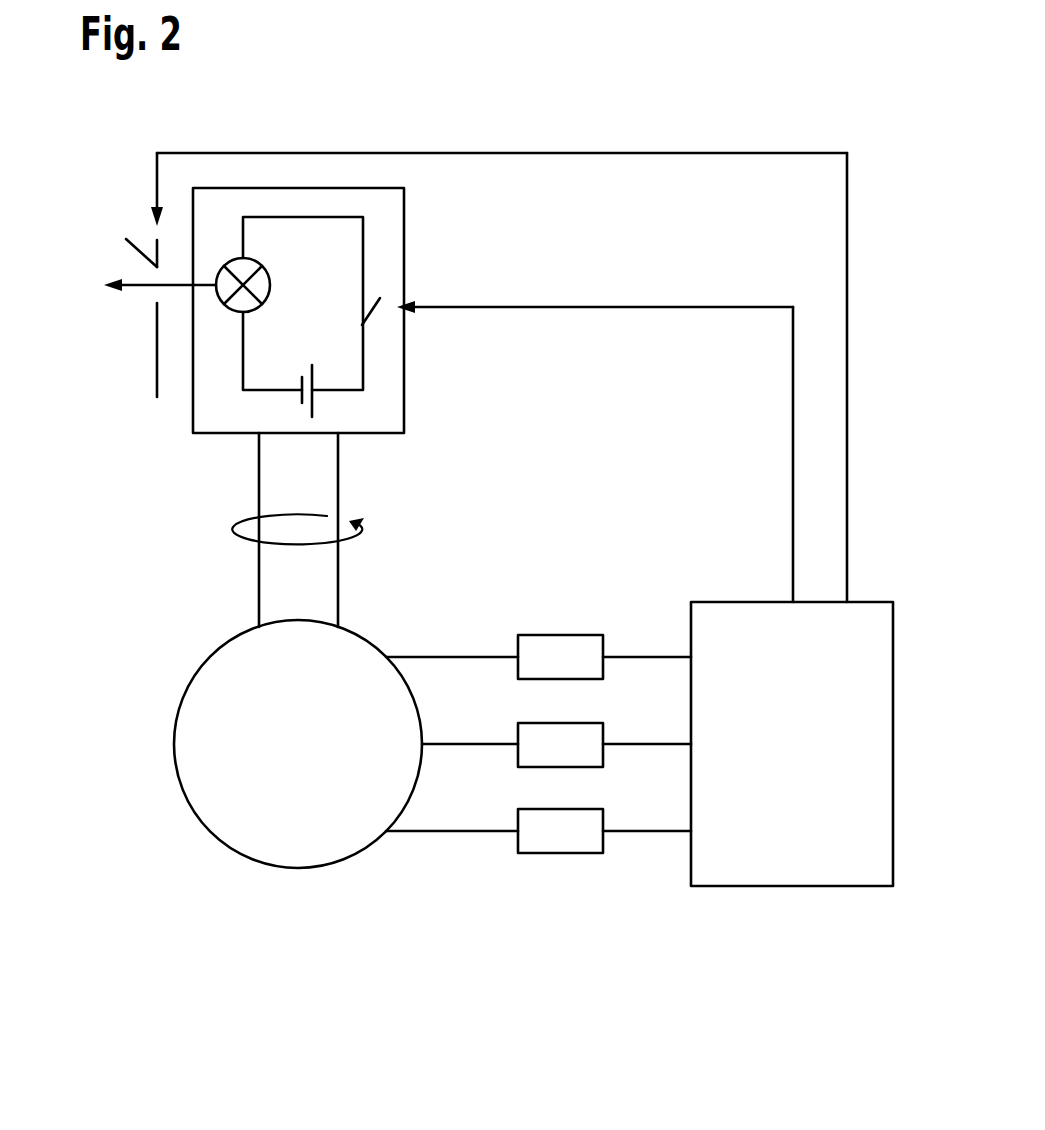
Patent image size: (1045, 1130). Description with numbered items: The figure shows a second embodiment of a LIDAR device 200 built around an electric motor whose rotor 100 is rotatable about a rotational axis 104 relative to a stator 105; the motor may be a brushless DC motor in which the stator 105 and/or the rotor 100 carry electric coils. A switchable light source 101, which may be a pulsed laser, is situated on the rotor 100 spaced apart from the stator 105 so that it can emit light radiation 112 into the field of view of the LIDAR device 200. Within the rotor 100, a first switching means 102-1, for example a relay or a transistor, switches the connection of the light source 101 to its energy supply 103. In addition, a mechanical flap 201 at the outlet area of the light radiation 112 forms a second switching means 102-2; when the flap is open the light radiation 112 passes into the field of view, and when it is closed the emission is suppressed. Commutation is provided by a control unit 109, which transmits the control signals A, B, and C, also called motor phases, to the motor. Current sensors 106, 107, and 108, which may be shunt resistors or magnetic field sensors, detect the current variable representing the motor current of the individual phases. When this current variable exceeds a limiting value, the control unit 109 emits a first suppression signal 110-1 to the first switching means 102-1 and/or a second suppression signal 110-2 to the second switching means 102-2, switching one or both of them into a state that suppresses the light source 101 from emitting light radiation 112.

The rotor 100 is at (370, 146).
The LIDAR device 200 is at (770, 120).
The switchable light source 101 is at (239, 259).
The second switching means 102-2 is at (140, 244).
The mechanical flap 201 is at (122, 202).
The first switching means 102-1 is at (382, 284).
The energy supply 103 is at (302, 398).
The rotational axis 104 is at (283, 585).
The stator 105 is at (330, 863).
The current sensor 106 is at (558, 635).
The current sensor 107 is at (603, 754).
The current sensor 108 is at (560, 853).
The control unit 109 is at (745, 602).
The first signal 110-1 is at (793, 383).
The second signal 110-2 is at (847, 218).
The light radiation 112 is at (150, 297).
The control signal A is at (436, 657).
The control signal B is at (483, 744).
The control signal C is at (450, 840).